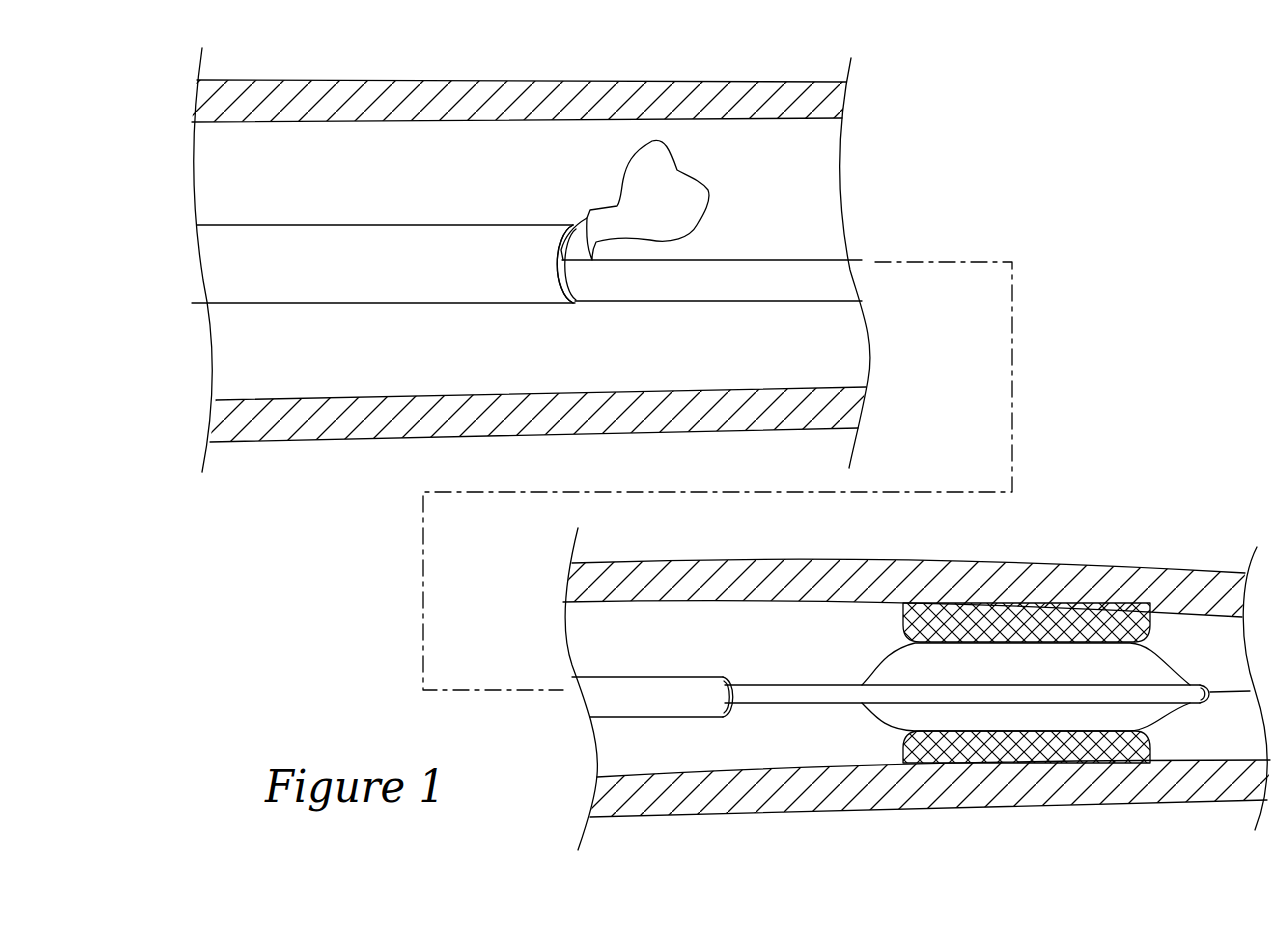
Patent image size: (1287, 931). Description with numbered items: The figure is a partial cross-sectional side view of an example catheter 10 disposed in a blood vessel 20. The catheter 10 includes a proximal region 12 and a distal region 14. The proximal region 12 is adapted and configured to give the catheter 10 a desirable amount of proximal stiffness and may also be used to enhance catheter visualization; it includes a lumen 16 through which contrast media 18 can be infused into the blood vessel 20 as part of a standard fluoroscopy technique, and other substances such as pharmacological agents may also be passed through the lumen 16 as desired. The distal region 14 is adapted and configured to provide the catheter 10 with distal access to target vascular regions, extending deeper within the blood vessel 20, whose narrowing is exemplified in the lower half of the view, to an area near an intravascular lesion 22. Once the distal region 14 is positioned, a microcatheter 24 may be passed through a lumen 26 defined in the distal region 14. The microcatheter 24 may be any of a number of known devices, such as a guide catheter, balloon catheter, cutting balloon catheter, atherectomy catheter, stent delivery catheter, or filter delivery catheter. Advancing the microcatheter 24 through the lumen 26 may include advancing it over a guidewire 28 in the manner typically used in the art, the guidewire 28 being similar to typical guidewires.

The catheter 10 is at (500, 211).
The proximal region 12 is at (342, 240).
The distal region 14 is at (613, 707).
The lumen 16 is at (591, 214).
The contrast media 18 is at (660, 157).
The blood vessel 20 is at (766, 88).
The intravascular lesion 22 is at (1115, 628).
The microcatheter 24 is at (857, 712).
The lumen 26 is at (730, 718).
The guidewire 28 is at (1227, 692).